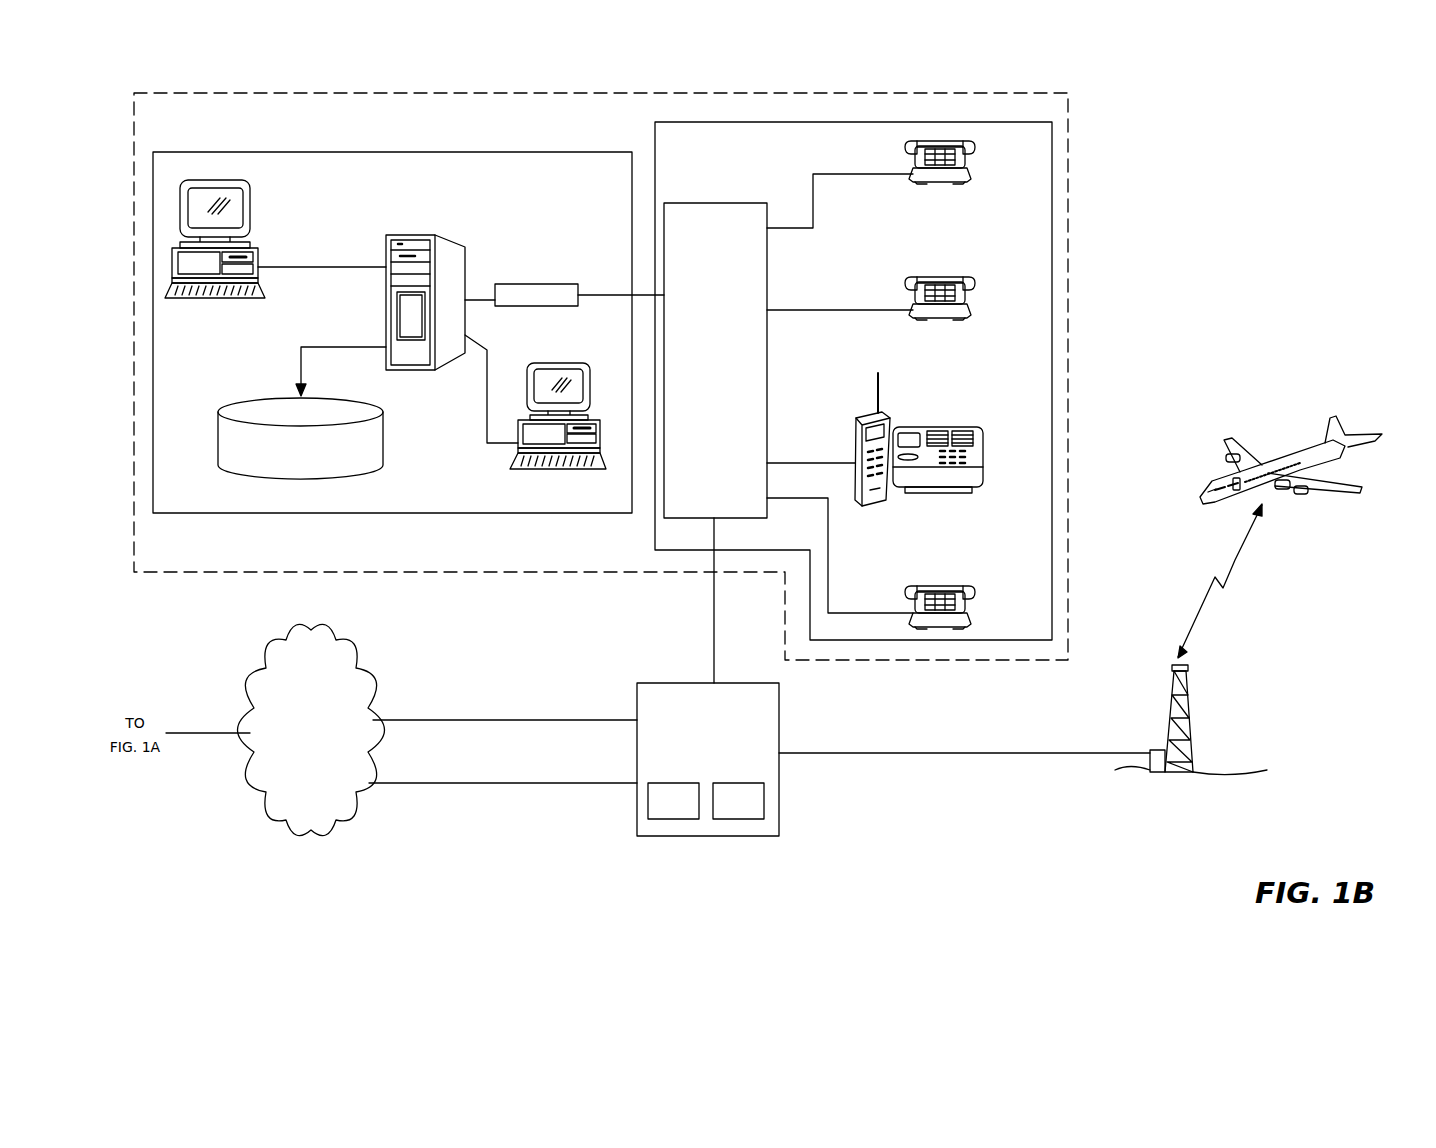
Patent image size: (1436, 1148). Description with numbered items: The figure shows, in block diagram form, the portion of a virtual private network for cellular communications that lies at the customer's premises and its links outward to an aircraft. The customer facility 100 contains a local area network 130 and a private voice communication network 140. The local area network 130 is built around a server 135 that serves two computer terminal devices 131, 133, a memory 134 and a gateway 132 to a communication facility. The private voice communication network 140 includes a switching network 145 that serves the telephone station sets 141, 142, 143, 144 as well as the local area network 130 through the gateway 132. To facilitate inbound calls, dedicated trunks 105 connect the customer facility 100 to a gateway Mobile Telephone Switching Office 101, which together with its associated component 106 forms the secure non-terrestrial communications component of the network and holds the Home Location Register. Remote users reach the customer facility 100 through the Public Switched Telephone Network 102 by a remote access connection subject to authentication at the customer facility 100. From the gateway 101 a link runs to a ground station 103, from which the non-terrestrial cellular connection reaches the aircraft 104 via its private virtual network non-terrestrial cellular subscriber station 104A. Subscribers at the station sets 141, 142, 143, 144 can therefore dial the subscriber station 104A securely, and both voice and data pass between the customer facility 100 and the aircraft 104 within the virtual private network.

The customer facility 100 is at (1068, 140).
The gateway Mobile Telephone Switching Office 101 is at (764, 797).
The Public Switched Telephone Network 102 is at (337, 637).
The ground station antenna tower 103 is at (1176, 779).
The aircraft 104 is at (1340, 492).
The private virtual network non-terrestrial cellular subscriber station 104A is at (1237, 490).
The dedicated trunks 105 is at (712, 603).
The secure non-terrestrial communications component 106 is at (672, 819).
The local area network 130 is at (453, 513).
The computer terminal device 131 is at (252, 212).
The gateway 132 is at (560, 284).
The computer terminal device 133 is at (566, 363).
The memory 134 is at (375, 428).
The server 135 is at (450, 242).
The private voice communication network 140 is at (655, 528).
The communication terminal 141 is at (978, 142).
The communication terminal 142 is at (978, 280).
The communication terminal 143 is at (983, 447).
The communication terminal 144 is at (978, 588).
The switching network 145 is at (742, 203).